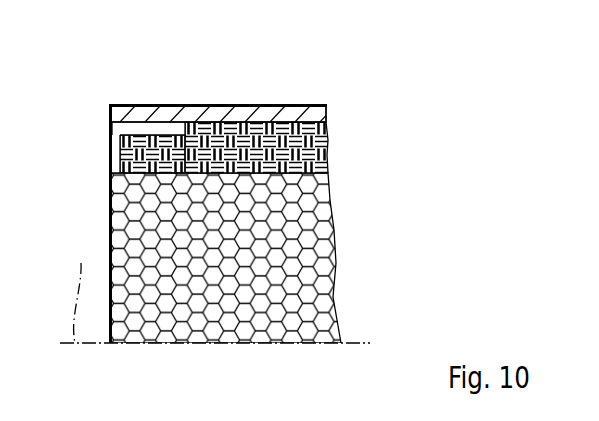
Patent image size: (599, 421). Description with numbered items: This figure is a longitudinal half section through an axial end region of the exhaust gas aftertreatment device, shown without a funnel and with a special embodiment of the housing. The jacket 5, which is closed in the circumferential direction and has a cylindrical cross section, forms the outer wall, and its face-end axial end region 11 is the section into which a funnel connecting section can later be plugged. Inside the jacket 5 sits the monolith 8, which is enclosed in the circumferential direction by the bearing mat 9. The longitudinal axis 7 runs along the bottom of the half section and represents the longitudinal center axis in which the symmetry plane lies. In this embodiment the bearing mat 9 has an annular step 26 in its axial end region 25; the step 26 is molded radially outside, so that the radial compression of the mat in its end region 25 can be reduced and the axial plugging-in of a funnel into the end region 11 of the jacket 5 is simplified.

The jacket 5 is at (310, 104).
The longitudinal axis 7 is at (79, 289).
The monolith 8 is at (322, 262).
The bearing mat 9 is at (331, 141).
The axial end region 11 is at (121, 119).
The axial end region 25 is at (132, 155).
The annular step 26 is at (153, 134).